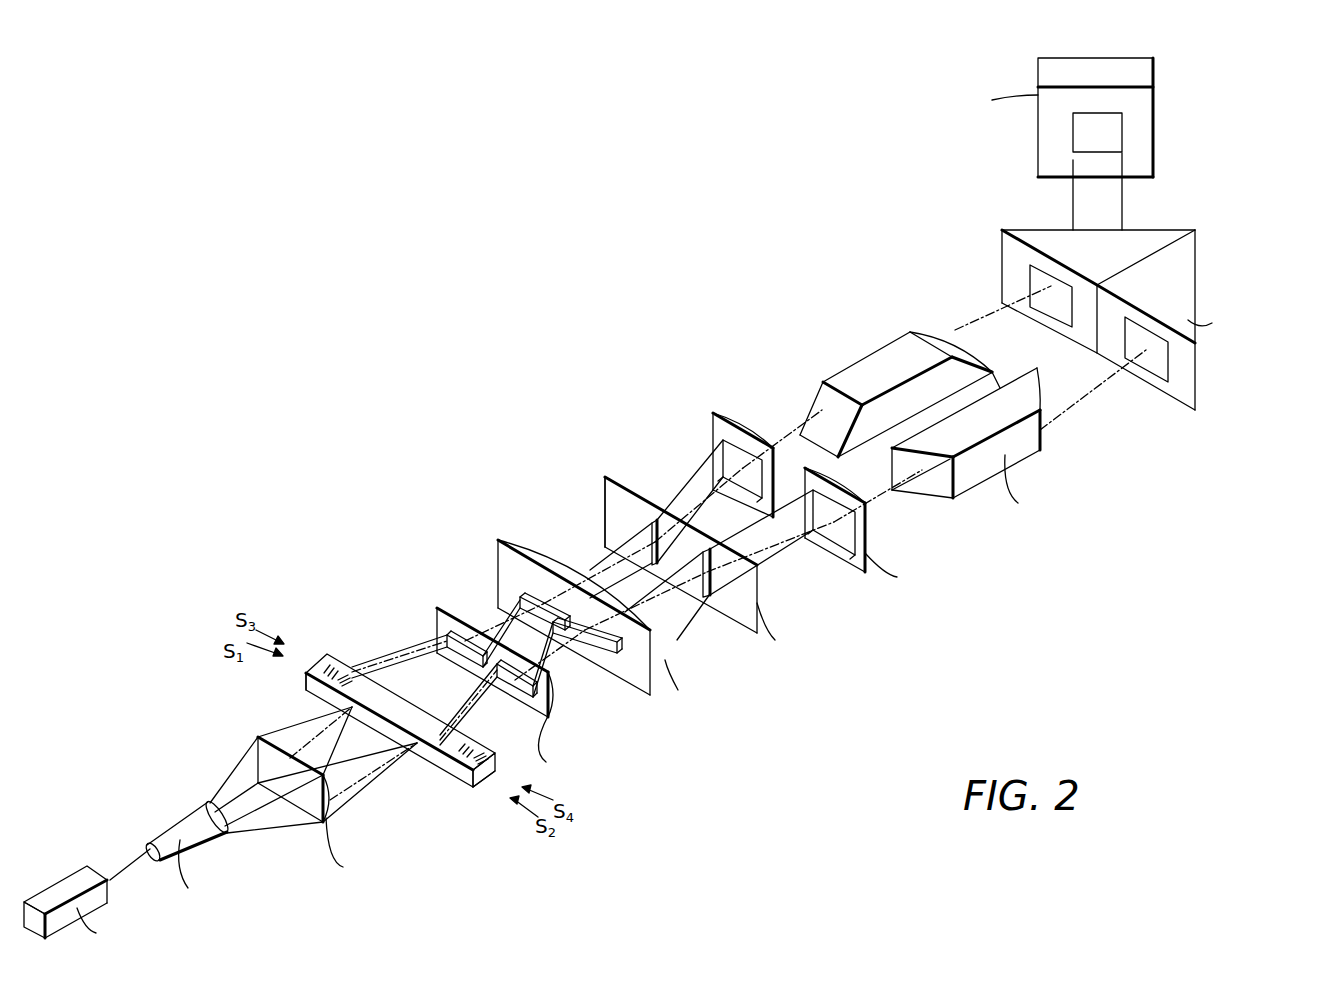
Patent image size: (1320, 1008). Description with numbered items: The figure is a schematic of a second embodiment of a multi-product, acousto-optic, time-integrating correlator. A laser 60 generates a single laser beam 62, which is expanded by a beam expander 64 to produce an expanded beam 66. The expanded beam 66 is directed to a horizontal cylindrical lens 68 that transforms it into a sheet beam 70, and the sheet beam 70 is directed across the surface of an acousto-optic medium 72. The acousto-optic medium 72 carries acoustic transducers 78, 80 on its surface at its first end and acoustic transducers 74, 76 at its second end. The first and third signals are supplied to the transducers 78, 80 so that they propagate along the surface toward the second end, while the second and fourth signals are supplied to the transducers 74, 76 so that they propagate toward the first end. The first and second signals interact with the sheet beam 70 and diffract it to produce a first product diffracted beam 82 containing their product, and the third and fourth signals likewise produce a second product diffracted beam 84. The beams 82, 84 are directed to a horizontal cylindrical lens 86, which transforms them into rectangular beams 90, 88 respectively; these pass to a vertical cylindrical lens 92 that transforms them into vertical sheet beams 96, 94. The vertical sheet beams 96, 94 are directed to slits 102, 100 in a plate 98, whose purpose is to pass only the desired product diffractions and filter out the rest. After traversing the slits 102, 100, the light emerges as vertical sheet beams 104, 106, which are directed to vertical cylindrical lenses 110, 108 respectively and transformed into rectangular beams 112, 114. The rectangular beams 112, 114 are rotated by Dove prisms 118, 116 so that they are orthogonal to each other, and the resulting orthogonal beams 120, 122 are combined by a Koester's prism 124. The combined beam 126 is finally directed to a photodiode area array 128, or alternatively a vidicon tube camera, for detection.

The laser 60 is at (58, 885).
The laser beam 62 is at (120, 870).
The beam expander 64 is at (177, 828).
The expanded beam 66 is at (227, 777).
The horizontal cylindrical lens 68 is at (258, 737).
The sheet beam 70 is at (293, 722).
The acousto-optic medium 72 is at (435, 772).
The acoustic transducer 74 is at (470, 776).
The acoustic transducer 76 is at (490, 742).
The acoustic transducer 78 is at (310, 690).
The acoustic transducer 80 is at (328, 653).
The first product diffracted beam 82 is at (420, 652).
The second product diffracted beam 84 is at (510, 705).
The horizontal cylindrical lens 86 is at (553, 707).
The rectangular beam 88 is at (585, 668).
The rectangular beam 90 is at (485, 612).
The vertical cylindrical lens 92 is at (650, 650).
The vertical sheet beam 94 is at (680, 612).
The vertical sheet beam 96 is at (583, 557).
The plate 98 is at (757, 628).
The slit 100 is at (710, 566).
The slit 102 is at (607, 512).
The vertical sheet beam 104 is at (680, 485).
The vertical sheet beam 106 is at (793, 573).
The vertical cylindrical lens 108 is at (862, 567).
The vertical cylindrical lens 110 is at (718, 425).
The rectangular beam 112 is at (782, 403).
The rectangular beam 114 is at (917, 517).
The Dove prism 116 is at (980, 463).
The Dove prism 118 is at (850, 368).
The orthogonal beam 120 is at (1100, 417).
The orthogonal beam 122 is at (938, 317).
The Koester's prism 124 is at (1195, 377).
The combined beam 126 is at (1122, 200).
The photodiode area array 128 is at (1155, 123).